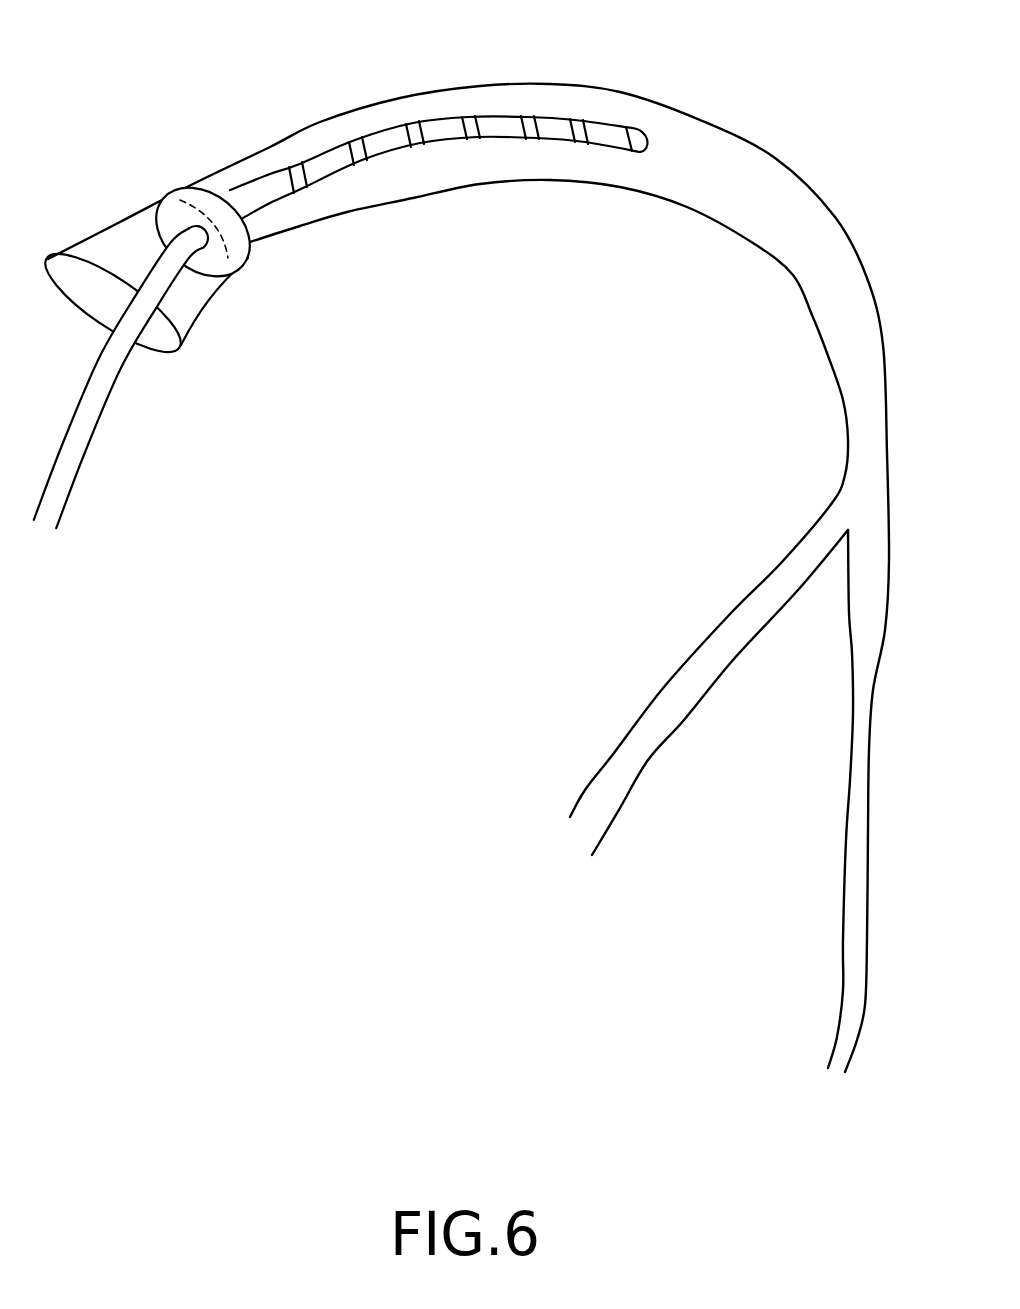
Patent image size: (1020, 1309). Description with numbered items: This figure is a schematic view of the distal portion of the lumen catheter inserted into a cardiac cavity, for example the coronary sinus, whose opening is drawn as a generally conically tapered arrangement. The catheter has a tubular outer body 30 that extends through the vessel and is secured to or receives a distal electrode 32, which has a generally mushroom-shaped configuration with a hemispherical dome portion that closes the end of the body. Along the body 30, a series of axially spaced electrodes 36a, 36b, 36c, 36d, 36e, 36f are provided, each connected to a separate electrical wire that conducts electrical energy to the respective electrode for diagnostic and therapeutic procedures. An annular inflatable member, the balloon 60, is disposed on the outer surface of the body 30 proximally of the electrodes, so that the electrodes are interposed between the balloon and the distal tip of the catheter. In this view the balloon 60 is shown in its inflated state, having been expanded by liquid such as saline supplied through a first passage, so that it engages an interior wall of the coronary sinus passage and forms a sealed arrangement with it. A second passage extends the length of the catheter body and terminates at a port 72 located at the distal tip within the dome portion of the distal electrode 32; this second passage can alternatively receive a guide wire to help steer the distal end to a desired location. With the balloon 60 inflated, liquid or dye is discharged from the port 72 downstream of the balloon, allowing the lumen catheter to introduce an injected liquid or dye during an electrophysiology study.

The outer body 30 is at (387, 152).
The distal electrode 32 is at (630, 115).
The electrode 36a is at (297, 162).
The electrode 36b is at (354, 140).
The electrode 36c is at (413, 125).
The electrode 36d is at (480, 115).
The electrode 36e is at (550, 115).
The electrode 36f is at (598, 130).
The balloon 60 is at (200, 187).
The port 72 is at (650, 148).